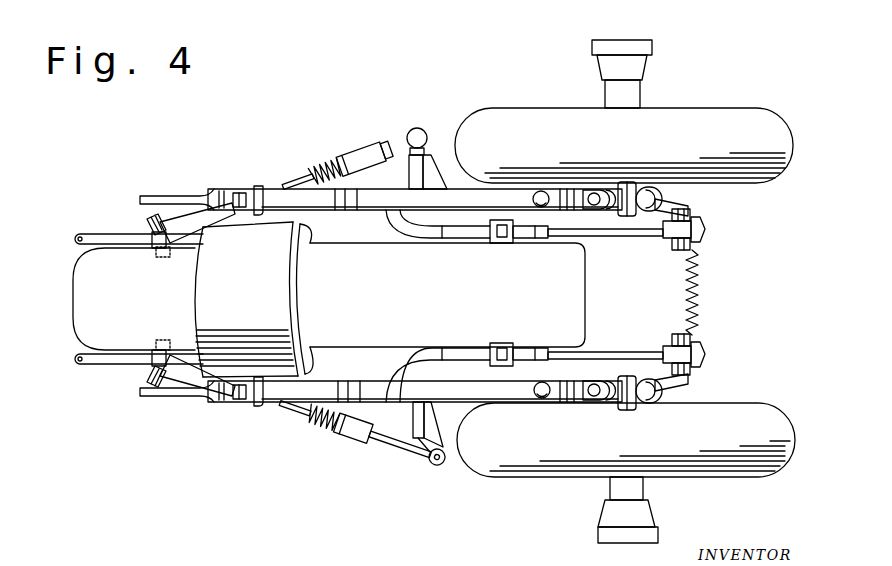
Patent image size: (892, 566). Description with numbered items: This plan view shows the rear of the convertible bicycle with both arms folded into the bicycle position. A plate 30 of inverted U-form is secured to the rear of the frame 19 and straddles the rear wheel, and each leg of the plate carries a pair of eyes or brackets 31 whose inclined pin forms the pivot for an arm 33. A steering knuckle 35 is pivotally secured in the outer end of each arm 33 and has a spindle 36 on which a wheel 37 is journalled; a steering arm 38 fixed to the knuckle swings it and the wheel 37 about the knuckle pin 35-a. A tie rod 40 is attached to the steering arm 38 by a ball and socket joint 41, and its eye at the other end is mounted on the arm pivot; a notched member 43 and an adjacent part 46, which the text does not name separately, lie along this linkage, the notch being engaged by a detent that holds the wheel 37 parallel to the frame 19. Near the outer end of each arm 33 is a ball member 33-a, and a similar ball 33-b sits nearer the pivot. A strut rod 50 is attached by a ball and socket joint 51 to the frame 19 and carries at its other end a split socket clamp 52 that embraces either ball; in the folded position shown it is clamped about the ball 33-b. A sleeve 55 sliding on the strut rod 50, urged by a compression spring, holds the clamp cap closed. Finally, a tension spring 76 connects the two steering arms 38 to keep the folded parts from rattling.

The frame 19 is at (113, 215).
The plate 30 is at (236, 290).
The eyes or brackets 31 is at (258, 216).
The arm 33 is at (362, 211).
The ball member 33-a is at (542, 190).
The ball 33-b is at (421, 127).
The steering knuckle 35 is at (640, 188).
The knuckle pin 35-a is at (597, 192).
The spindle 36 is at (623, 184).
The wheels 37 is at (750, 97).
The steering arm 38 is at (664, 211).
The tie rod 40 is at (435, 240).
The ball and socket joint 41 is at (694, 226).
The rod 43 is at (597, 237).
The tube 46 is at (464, 239).
The strut rod 50 is at (293, 184).
The ball and socket joint 51 is at (150, 232).
The socket clamp 52 is at (415, 458).
The sleeve 55 is at (353, 148).
The tension spring 76 is at (700, 294).